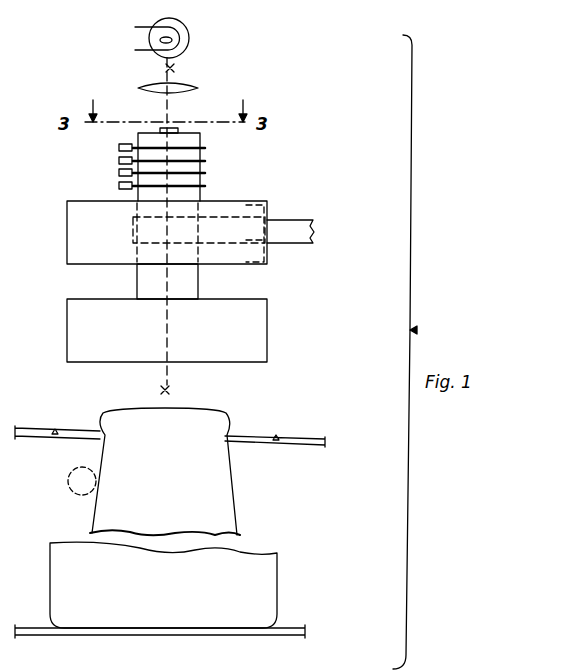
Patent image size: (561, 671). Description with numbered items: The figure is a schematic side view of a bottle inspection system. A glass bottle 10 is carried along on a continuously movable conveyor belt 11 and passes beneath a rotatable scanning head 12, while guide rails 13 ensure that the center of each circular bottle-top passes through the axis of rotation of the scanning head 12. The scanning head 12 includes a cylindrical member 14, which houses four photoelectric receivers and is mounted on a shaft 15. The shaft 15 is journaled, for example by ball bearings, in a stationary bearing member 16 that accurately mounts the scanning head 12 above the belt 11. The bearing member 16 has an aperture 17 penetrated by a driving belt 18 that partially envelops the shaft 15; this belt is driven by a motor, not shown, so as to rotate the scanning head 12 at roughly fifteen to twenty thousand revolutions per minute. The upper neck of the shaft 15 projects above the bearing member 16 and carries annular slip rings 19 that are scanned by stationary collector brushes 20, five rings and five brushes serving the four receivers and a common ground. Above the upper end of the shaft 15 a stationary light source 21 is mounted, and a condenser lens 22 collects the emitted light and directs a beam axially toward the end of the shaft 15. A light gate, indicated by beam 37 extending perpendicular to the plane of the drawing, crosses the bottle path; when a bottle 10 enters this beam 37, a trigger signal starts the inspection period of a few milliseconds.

The bottle 10 is at (215, 480).
The conveyor belt 11 is at (283, 627).
The scanning head 12 is at (319, 296).
The guide rails 13 is at (262, 441).
The cylindrical member 14 is at (253, 345).
The shaft 15 is at (200, 288).
The bearing member 16 is at (248, 205).
The aperture 17 is at (268, 241).
The driving belt 18 is at (297, 228).
The slip rings 19 is at (205, 148).
The collector brushes 20 is at (119, 186).
The light source 21 is at (189, 33).
The condenser lens 22 is at (184, 86).
The beam 37 is at (68, 481).